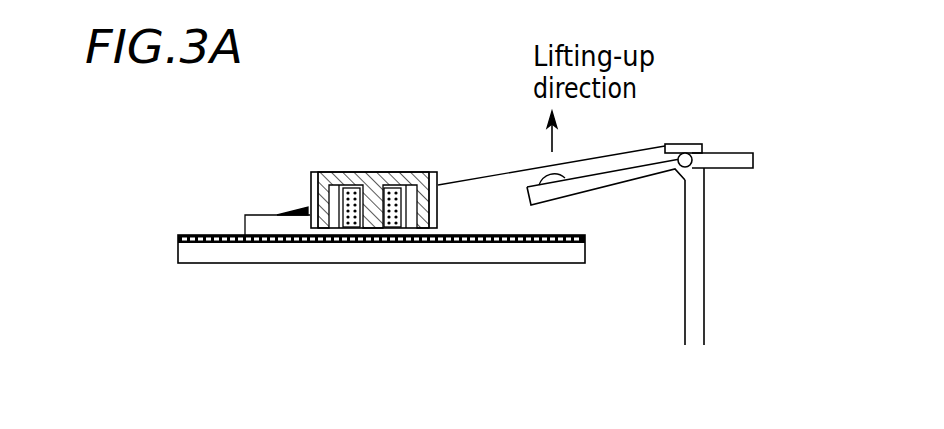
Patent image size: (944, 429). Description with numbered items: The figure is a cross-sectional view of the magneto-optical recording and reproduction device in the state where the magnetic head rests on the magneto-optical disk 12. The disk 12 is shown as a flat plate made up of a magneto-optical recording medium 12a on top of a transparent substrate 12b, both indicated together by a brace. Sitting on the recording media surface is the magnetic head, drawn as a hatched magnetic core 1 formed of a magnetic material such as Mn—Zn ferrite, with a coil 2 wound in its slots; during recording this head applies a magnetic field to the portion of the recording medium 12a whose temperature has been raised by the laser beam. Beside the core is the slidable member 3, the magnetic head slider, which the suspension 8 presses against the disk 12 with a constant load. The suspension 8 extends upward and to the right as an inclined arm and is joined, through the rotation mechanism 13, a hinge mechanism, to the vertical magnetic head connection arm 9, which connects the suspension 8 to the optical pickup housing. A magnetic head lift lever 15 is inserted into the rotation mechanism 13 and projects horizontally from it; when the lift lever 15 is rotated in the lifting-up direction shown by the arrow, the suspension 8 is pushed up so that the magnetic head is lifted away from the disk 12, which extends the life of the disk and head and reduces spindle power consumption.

The magnetic core 1 is at (367, 159).
The coil 2 is at (333, 192).
The slidable member 3 is at (258, 230).
The suspension 8 is at (525, 163).
The magnetic head connection arm 9 is at (693, 298).
The magneto-optical disk 12 is at (304, 243).
The magneto-optical recording medium 12a is at (178, 236).
The transparent substrate 12b is at (178, 255).
The rotation mechanism 13 is at (687, 154).
The magnetic head lift lever 15 is at (740, 163).